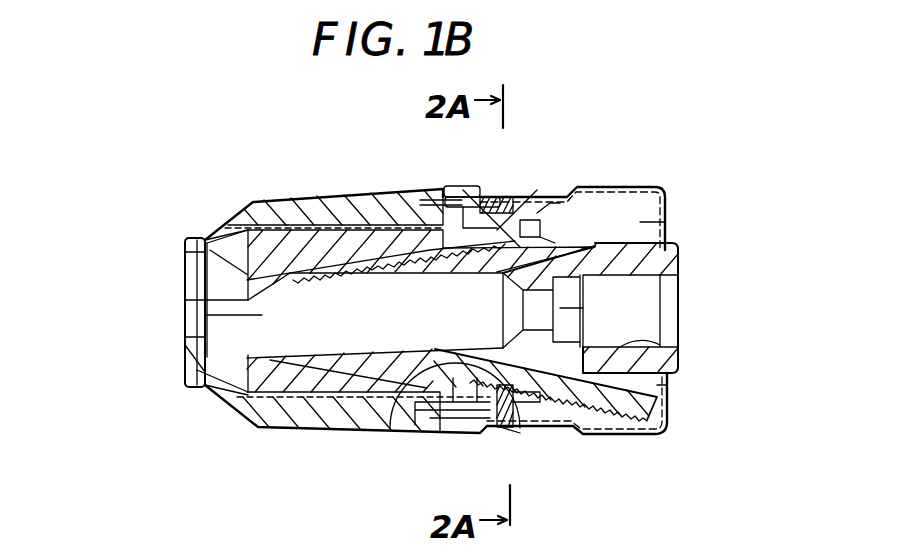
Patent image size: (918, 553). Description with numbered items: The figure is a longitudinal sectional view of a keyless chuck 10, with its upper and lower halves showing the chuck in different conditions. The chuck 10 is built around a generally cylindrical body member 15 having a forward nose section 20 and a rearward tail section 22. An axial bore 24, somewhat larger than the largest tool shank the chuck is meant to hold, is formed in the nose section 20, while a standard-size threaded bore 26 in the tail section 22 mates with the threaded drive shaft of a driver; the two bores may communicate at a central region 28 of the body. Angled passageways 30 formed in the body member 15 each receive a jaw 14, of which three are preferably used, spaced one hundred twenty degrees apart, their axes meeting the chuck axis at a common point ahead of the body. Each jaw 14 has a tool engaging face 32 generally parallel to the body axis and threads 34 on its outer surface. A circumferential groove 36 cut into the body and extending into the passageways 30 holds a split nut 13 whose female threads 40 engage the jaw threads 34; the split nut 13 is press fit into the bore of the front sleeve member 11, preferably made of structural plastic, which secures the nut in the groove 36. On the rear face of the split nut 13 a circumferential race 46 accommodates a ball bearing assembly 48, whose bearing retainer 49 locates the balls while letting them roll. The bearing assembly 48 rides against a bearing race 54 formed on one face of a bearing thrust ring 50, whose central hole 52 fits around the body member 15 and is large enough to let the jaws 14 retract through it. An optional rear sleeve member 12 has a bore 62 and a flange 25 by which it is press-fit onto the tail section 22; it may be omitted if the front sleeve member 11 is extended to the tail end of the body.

The keyless chuck 10 is at (686, 205).
The front sleeve member 11 is at (317, 194).
The rear sleeve member 12 is at (643, 187).
The split nut 13 is at (470, 185).
The jaws 14 is at (207, 300).
The body member 15 is at (262, 222).
The nose section 20 is at (203, 240).
The tail section 22 is at (672, 243).
The axial bore 24 is at (477, 277).
The flange 25 is at (667, 387).
The threaded bore 26 is at (640, 345).
The central region 28 is at (583, 308).
The passageways 30 is at (331, 356).
The tool engaging face 32 is at (193, 337).
The threads 34 is at (381, 275).
The circumferential groove 36 is at (407, 206).
The female threads 40 is at (407, 400).
The circumferential race 46 is at (490, 198).
The ball bearing assembly 48 is at (517, 198).
The bearing retainer 49 is at (493, 420).
The bearing thrust ring 50 is at (533, 208).
The central hole 52 is at (538, 236).
The bearing race 54 is at (520, 407).
The bore 62 is at (647, 222).